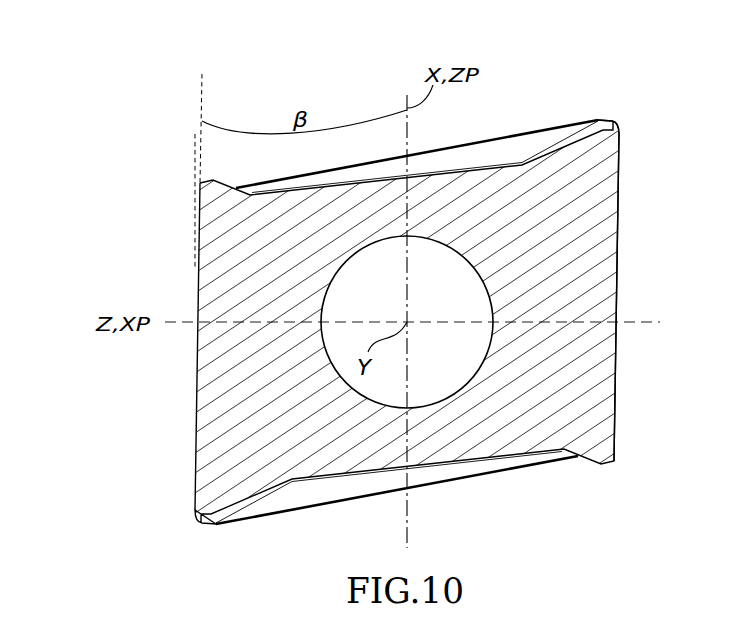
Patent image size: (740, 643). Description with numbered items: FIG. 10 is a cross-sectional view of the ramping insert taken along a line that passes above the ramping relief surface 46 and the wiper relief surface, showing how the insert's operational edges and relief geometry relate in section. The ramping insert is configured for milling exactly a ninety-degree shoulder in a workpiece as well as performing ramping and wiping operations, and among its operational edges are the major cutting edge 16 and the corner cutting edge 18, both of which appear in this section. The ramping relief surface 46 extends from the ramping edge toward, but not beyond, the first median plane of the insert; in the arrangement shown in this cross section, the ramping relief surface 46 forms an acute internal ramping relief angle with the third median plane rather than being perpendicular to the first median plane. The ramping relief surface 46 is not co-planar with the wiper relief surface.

The major cutting edge 16 is at (518, 132).
The corner cutting edge 18 is at (613, 118).
The ramping relief surface 46 is at (200, 228).